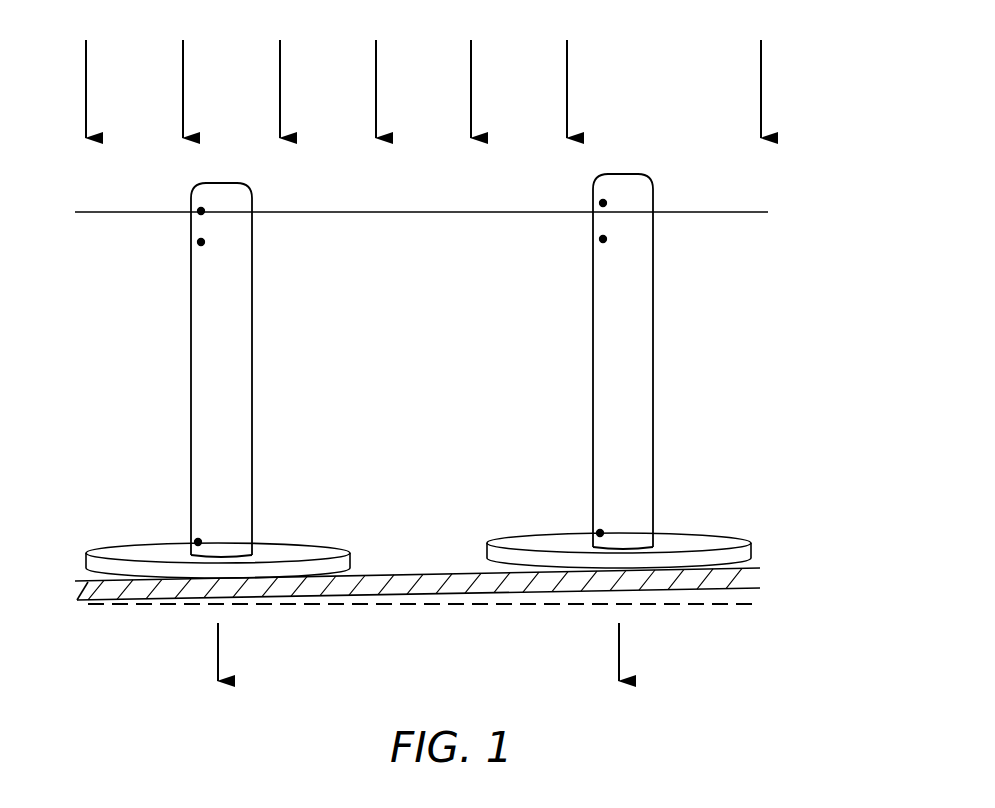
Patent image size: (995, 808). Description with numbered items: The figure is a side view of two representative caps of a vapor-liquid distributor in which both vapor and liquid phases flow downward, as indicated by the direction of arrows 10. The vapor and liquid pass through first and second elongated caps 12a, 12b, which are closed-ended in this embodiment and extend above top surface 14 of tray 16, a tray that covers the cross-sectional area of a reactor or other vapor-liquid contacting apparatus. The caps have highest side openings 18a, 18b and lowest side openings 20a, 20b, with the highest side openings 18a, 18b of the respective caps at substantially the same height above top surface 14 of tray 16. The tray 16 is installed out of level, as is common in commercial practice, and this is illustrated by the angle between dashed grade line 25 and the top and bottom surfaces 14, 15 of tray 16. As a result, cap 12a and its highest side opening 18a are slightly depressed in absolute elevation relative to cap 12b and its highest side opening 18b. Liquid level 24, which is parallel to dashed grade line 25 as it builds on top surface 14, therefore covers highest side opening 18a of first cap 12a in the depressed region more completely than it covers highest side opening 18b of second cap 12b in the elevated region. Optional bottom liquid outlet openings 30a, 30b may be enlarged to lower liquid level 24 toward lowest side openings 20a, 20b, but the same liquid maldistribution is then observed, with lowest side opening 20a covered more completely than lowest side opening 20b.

The arrows 10 is at (281, 58).
The first elongated cap 12a is at (253, 373).
The second elongated cap 12b is at (654, 364).
The top surface 14 is at (419, 575).
The bottom surface 15 is at (77, 600).
The tray 16 is at (744, 578).
The highest side opening of first cap 18a is at (201, 211).
The highest side opening of second cap 18b is at (603, 203).
The lowest side opening of first cap 20a is at (200, 242).
The lowest side opening of second cap 20b is at (602, 239).
The liquid level 24 is at (718, 212).
The dashed grade line 25 is at (752, 606).
The bottom liquid outlet opening of first cap 30a is at (198, 542).
The bottom liquid outlet opening of second cap 30b is at (600, 533).